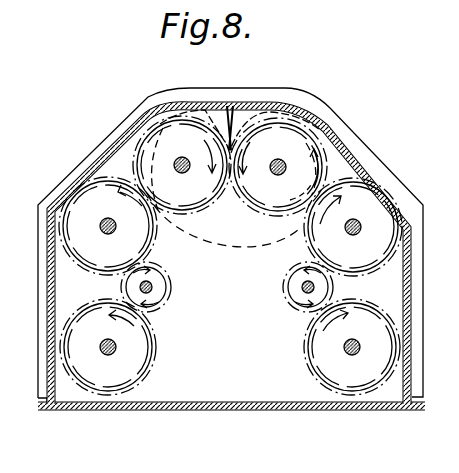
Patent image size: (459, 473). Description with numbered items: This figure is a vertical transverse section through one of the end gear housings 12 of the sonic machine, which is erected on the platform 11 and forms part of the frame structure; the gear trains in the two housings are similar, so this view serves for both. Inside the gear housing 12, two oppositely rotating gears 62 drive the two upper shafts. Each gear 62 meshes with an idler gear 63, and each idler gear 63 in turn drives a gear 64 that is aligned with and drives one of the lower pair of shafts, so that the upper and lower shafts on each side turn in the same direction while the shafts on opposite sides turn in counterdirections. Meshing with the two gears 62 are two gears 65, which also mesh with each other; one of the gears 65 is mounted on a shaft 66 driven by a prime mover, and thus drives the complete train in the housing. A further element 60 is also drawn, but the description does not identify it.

The platform 11 is at (388, 411).
The end gear housing 12 is at (357, 151).
The roller 60 is at (100, 178).
The oppositely rotating gear 62 is at (363, 180).
The idler gear 63 is at (283, 282).
The gear 64 is at (157, 340).
The gear 65 is at (152, 116).
The shaft 66 is at (278, 158).